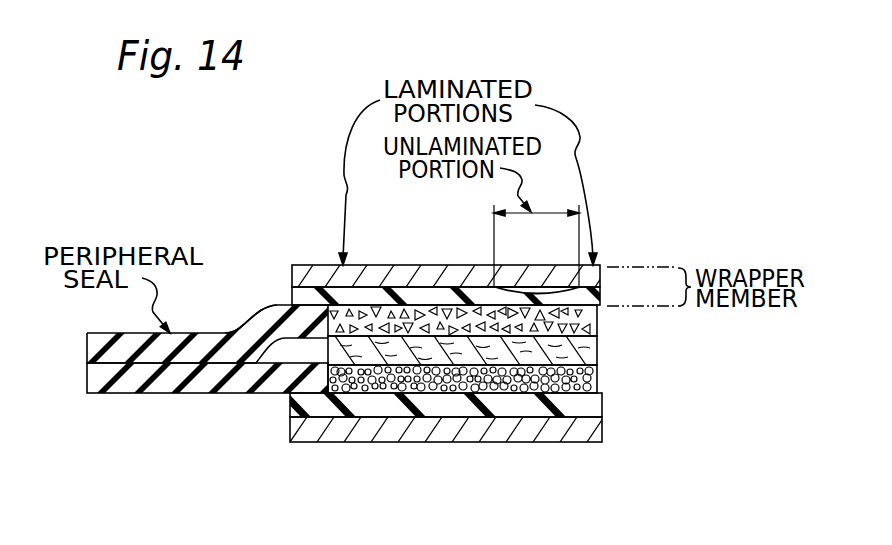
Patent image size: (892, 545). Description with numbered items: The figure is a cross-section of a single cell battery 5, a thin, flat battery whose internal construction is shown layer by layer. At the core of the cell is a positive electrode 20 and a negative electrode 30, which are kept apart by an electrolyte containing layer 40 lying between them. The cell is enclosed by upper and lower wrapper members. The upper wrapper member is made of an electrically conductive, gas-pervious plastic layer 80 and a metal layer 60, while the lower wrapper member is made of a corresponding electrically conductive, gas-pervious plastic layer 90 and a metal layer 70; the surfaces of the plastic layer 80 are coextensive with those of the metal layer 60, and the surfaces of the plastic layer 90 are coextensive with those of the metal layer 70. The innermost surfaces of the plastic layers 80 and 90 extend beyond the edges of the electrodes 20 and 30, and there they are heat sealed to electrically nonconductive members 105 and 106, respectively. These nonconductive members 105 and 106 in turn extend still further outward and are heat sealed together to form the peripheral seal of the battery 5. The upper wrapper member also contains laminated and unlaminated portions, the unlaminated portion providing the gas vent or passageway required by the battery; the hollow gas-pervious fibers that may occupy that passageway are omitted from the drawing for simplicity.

The single cell battery 5 is at (276, 285).
The electrically nonconductive member 105 is at (90, 345).
The electrically nonconductive member 106 is at (90, 373).
The metal layer 60 is at (593, 279).
The electrically conductive, gas-pervious plastic layer 80 is at (600, 300).
The positive electrode 20 is at (593, 320).
The electrolyte containing layer 40 is at (595, 350).
The negative electrode 30 is at (597, 378).
The electrically conductive, gas-pervious plastic layer 90 is at (600, 405).
The metal layer 70 is at (600, 434).